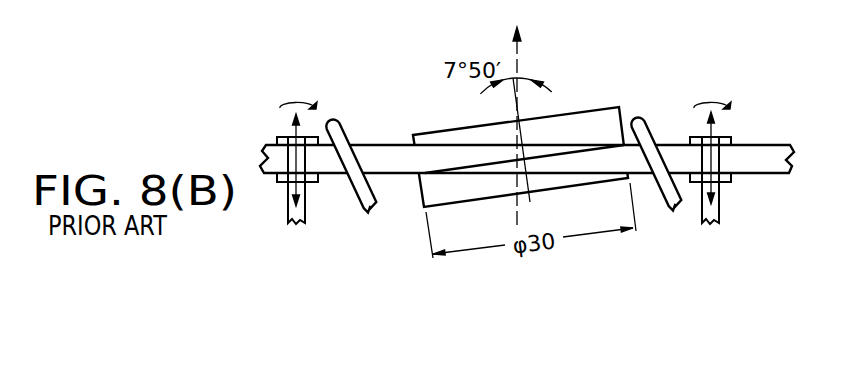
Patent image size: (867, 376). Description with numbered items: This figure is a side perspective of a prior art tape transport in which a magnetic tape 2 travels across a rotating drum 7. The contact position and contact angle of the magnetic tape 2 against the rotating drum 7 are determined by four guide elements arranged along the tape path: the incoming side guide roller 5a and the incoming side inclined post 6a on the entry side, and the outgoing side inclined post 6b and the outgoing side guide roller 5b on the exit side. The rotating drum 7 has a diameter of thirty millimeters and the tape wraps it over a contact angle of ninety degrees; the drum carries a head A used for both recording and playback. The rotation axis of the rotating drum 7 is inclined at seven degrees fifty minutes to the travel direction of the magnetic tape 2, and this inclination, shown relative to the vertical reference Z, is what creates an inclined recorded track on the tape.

The magnetic tape 2 is at (763, 174).
The incoming side guide roller 5a is at (298, 226).
The outgoing side guide roller 5b is at (716, 224).
The incoming side inclined post 6a is at (362, 200).
The outgoing side inclined post 6b is at (664, 201).
The rotating drum 7 is at (620, 107).
The head A is at (574, 147).
The axis Z is at (517, 114).